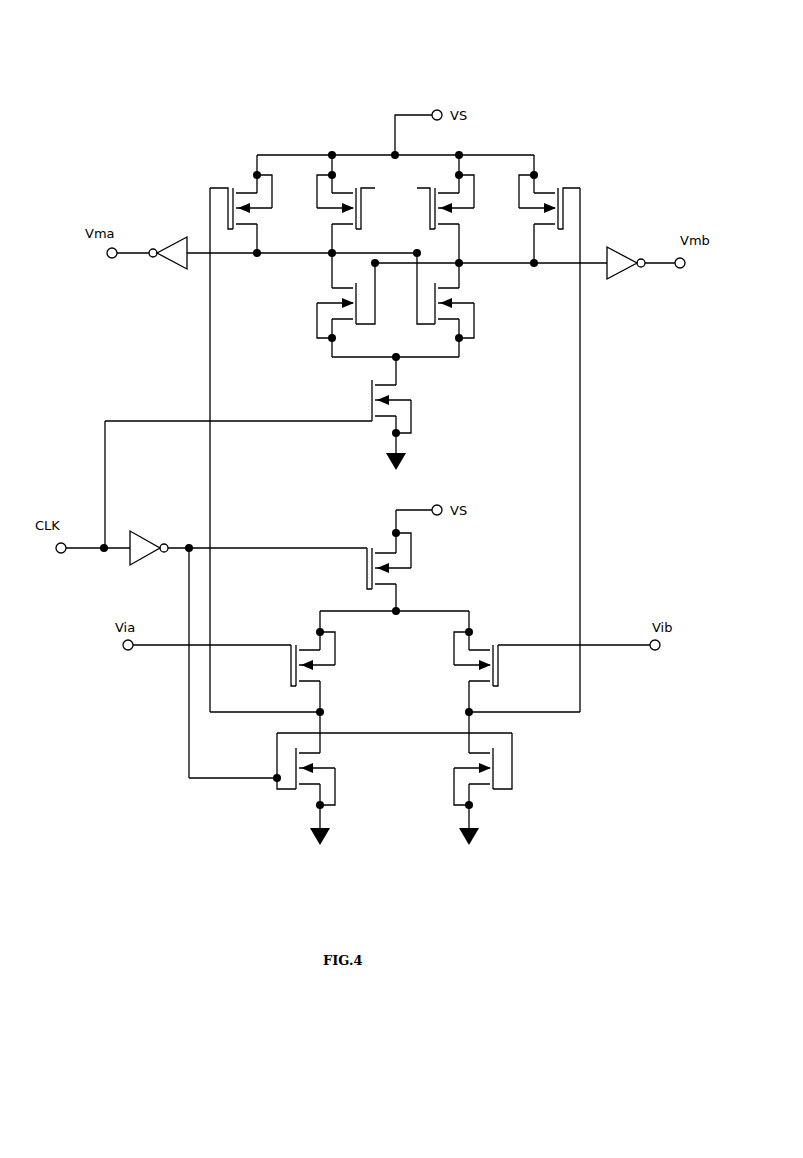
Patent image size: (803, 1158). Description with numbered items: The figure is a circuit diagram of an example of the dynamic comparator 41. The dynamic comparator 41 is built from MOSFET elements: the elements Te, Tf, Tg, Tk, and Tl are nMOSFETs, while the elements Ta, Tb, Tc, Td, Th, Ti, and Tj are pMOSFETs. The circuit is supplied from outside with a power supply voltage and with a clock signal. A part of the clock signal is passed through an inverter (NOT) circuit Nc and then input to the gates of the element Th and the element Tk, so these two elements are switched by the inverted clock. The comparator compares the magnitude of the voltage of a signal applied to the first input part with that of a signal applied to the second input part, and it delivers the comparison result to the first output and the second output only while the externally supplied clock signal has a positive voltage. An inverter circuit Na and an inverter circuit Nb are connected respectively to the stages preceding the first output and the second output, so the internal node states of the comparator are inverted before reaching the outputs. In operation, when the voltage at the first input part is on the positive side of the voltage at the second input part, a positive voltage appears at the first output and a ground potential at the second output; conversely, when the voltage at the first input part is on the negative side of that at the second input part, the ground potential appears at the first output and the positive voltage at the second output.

The dynamic comparator 41 is at (162, 30).
The element Ta is at (241, 204).
The element Tb is at (341, 219).
The element Tc is at (448, 219).
The element Td is at (542, 217).
The element Te is at (338, 310).
The element Tf is at (449, 305).
The element Tg is at (258, 418).
The element Th is at (375, 559).
The element Ti is at (312, 690).
The element Tj is at (473, 690).
The element Tk is at (311, 789).
The element Tl is at (472, 789).
The inverter circuit Na is at (168, 244).
The inverter circuit Nb is at (626, 255).
The inverter circuit Nc is at (149, 541).